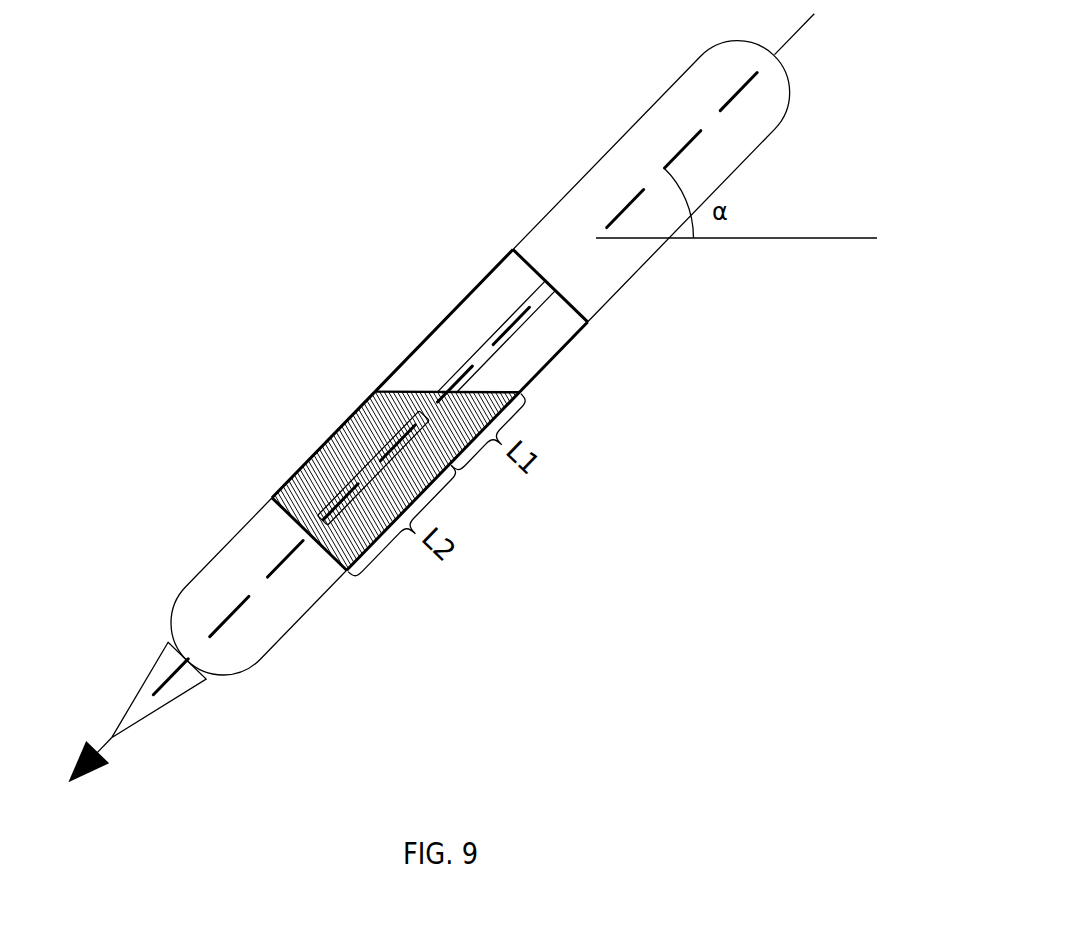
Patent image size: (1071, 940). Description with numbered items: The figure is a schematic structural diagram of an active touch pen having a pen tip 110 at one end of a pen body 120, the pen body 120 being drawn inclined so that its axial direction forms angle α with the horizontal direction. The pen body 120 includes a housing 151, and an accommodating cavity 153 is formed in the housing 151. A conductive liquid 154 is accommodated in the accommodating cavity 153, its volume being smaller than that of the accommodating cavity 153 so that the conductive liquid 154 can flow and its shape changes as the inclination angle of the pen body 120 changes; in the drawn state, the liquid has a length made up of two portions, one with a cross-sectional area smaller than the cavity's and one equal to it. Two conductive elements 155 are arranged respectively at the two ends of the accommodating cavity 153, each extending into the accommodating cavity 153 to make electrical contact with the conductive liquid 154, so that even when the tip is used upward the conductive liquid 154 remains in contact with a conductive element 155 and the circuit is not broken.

The pen tip 110 is at (147, 677).
The pen body 120 is at (588, 172).
The housing 151 is at (335, 435).
The accommodating cavity 153 is at (402, 341).
The conductive liquid 154 is at (295, 482).
The conductive element 155 is at (490, 330).